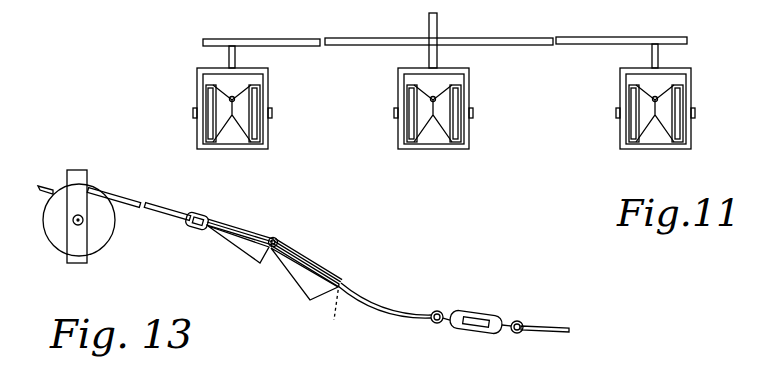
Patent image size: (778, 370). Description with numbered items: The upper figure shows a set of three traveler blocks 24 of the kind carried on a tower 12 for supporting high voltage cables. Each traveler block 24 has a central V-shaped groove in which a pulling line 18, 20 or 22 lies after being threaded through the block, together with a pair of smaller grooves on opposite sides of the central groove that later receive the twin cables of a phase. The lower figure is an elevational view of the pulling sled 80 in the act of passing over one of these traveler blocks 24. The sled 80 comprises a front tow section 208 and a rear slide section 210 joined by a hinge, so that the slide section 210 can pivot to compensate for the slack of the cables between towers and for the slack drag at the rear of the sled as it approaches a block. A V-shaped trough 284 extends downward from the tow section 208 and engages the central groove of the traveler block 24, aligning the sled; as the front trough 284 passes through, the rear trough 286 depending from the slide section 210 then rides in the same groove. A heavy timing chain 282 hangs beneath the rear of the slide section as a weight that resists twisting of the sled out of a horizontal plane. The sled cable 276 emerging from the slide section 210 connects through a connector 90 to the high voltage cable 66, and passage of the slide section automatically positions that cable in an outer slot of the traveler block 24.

In FIG. 11, the tower 12 is at (517, 41).
In FIG. 11, the pulling line 18 is at (657, 98).
In FIG. 11, the pulling line 20 is at (435, 99).
In FIG. 11, the pulling line 22 is at (234, 97).
In FIG. 13, the pulling line 22 is at (128, 197).
In FIG. 13, the traveler block 24 is at (102, 238).
In FIG. 13, the high voltage cable 66 is at (547, 327).
In FIG. 13, the pulling sled 80 is at (289, 242).
In FIG. 13, the connector 90 is at (475, 315).
In FIG. 13, the tow section 208 is at (223, 228).
In FIG. 13, the slide section 210 is at (325, 268).
In FIG. 13, the sled cable 276 is at (378, 297).
In FIG. 13, the timing chain 282 is at (337, 313).
In FIG. 13, the V-shaped trough 284 is at (247, 252).
In FIG. 13, the trough 286 is at (303, 287).